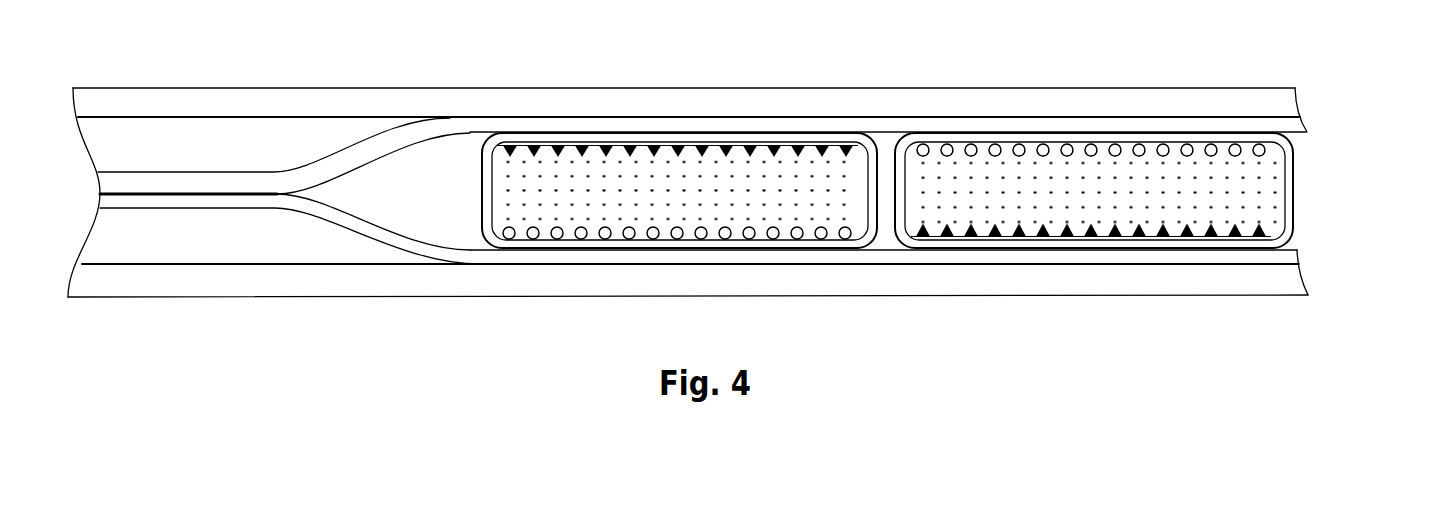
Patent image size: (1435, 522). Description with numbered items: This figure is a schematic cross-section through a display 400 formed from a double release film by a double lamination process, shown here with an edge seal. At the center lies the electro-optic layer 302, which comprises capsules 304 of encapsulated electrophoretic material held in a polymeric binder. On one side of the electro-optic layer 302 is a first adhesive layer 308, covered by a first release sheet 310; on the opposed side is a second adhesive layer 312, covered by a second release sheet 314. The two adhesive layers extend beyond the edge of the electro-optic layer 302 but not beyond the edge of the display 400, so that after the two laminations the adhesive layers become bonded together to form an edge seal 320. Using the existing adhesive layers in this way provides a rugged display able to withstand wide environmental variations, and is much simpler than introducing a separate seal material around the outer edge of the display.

The display 400 is at (584, 64).
The central layer of electro-optic material 302 is at (1325, 155).
The capsules 304 is at (875, 162).
The first adhesive layer 308 is at (1135, 125).
The first release sheet 310 is at (1030, 100).
The second adhesive layer 312 is at (1295, 260).
The second release sheet 314 is at (1175, 283).
The edge seal 320 is at (165, 195).